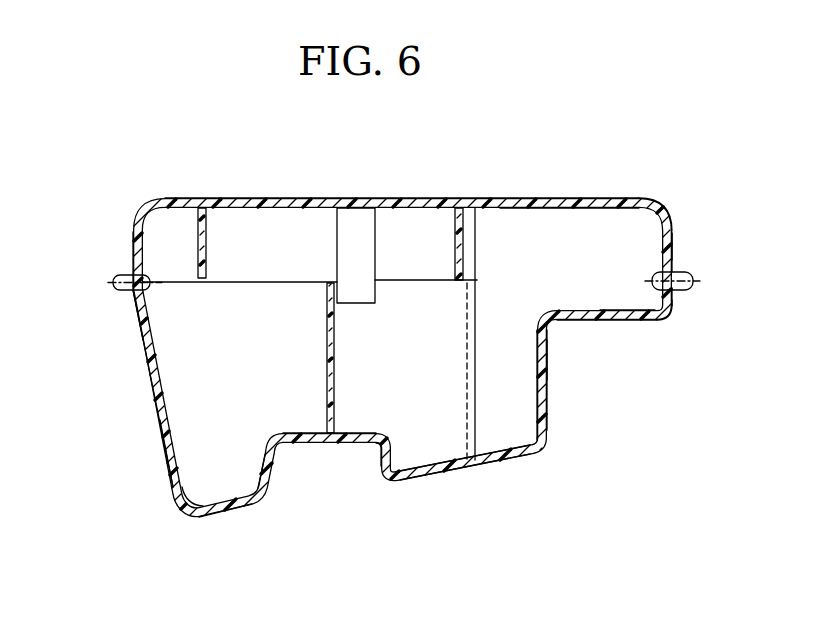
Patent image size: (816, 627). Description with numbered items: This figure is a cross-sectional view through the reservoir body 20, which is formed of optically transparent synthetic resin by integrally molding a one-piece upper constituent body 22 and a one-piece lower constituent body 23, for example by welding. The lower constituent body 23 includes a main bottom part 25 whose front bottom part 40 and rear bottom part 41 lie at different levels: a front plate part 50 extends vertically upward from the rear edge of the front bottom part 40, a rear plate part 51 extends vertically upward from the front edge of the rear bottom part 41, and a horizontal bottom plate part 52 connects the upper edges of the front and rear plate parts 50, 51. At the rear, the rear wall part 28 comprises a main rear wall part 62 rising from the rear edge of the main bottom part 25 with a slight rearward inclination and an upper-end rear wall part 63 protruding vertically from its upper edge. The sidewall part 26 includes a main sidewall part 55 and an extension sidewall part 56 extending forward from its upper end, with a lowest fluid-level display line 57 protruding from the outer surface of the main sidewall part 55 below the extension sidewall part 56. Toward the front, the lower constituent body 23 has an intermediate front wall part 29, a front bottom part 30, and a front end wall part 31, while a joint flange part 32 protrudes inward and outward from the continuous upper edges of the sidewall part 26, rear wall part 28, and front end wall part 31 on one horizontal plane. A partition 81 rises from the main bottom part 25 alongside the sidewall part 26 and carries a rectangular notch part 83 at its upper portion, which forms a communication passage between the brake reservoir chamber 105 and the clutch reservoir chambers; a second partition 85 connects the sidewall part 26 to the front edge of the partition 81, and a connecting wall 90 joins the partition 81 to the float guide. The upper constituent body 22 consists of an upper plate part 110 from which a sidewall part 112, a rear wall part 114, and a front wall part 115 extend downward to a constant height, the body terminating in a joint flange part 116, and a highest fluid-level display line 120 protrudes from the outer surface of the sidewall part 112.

The reservoir body 20 is at (661, 176).
The upper constituent body 22 is at (675, 248).
The lower constituent body 23 is at (672, 312).
The main bottom part 25 is at (455, 470).
The sidewall part 26 is at (510, 378).
The rear wall part 28 is at (150, 375).
The intermediate front wall part 29 is at (548, 413).
The front bottom part 30 is at (590, 320).
The front end wall part 31 is at (670, 300).
The joint flange part 32 is at (693, 290).
The front bottom part 40 is at (503, 462).
The rear bottom part 41 is at (222, 513).
The front plate part 50 is at (378, 460).
The rear plate part 51 is at (277, 456).
The bottom plate part 52 is at (320, 442).
The main sidewall part 55 is at (500, 424).
The extension sidewall part 56 is at (622, 298).
The lowest fluid-level display line 57 is at (555, 363).
The main rear wall part 62 is at (158, 432).
The upper-end rear wall part 63 is at (133, 300).
The partition 81 is at (412, 303).
The notch part 83 is at (357, 303).
The partition 85 is at (467, 318).
The connecting wall 90 is at (340, 392).
The brake reservoir chamber 105 is at (213, 458).
The upper plate part 110 is at (277, 198).
The sidewall part 112 is at (567, 217).
The rear wall part 114 is at (128, 243).
The front wall part 115 is at (668, 265).
The joint flange part 116 is at (128, 270).
The highest fluid-level display line 120 is at (673, 235).